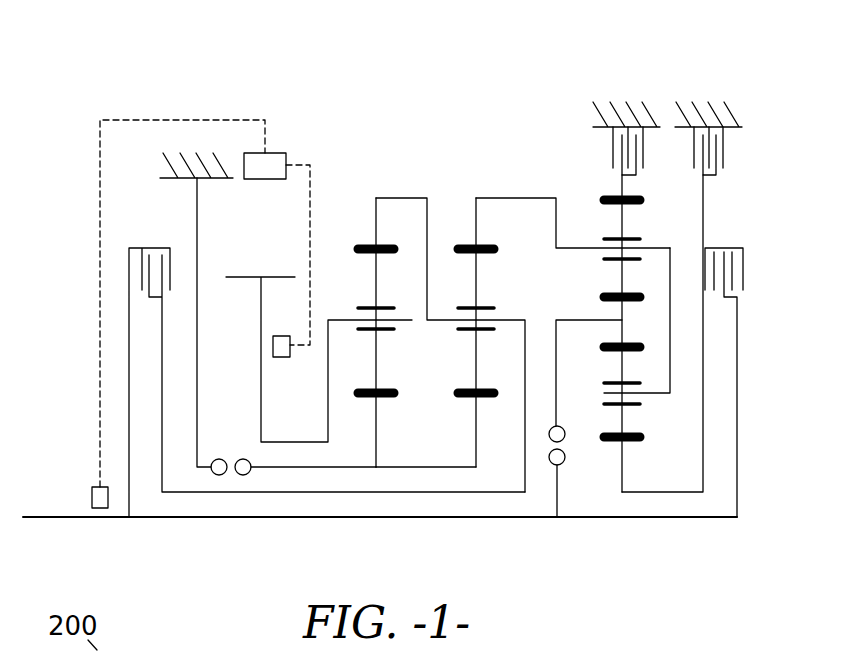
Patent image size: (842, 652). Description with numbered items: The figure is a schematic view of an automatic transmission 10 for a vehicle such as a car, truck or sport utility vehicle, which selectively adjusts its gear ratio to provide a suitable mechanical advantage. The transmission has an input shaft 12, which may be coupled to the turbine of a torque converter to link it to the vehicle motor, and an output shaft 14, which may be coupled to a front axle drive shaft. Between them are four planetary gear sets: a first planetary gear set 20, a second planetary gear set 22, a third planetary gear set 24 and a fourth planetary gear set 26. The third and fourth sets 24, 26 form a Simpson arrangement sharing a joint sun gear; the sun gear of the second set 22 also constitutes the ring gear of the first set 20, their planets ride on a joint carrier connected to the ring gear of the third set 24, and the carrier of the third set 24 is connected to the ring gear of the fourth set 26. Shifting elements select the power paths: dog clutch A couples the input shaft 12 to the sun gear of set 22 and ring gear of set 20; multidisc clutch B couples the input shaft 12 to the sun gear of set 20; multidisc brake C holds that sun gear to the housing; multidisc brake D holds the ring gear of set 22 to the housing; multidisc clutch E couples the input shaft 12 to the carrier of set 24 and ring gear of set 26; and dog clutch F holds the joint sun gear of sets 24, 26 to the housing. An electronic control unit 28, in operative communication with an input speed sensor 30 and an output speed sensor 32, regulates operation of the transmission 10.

The automatic transmission 10 is at (148, 78).
The input shaft 12 is at (48, 515).
The output shaft 14 is at (262, 405).
The first planetary gear set 20 is at (644, 413).
The second planetary gear set 22 is at (660, 232).
The third planetary gear set 24 is at (450, 290).
The fourth planetary gear set 26 is at (394, 345).
The electronic control unit 28 is at (285, 152).
The input speed sensor 30 is at (92, 500).
The output speed sensor 32 is at (282, 357).
The dog clutch A is at (565, 462).
The multidisc clutch B is at (722, 248).
The multidisc brake C is at (723, 150).
The multidisc brake D is at (613, 150).
The multidisc clutch E is at (160, 247).
The dog clutch F is at (219, 475).